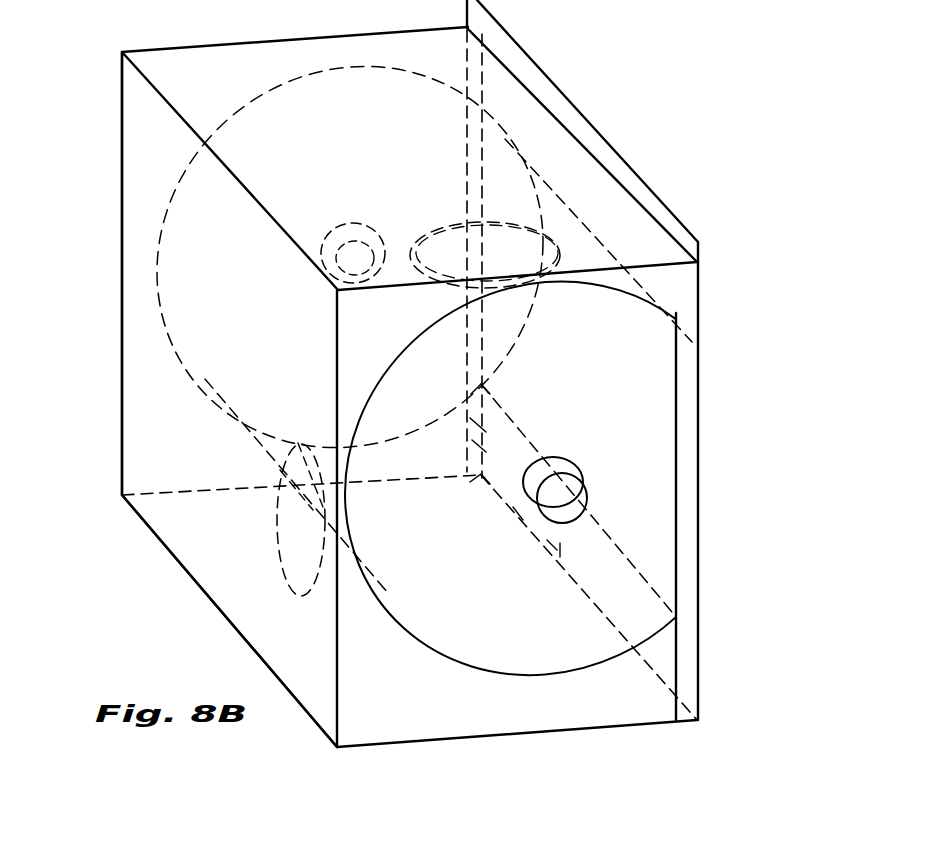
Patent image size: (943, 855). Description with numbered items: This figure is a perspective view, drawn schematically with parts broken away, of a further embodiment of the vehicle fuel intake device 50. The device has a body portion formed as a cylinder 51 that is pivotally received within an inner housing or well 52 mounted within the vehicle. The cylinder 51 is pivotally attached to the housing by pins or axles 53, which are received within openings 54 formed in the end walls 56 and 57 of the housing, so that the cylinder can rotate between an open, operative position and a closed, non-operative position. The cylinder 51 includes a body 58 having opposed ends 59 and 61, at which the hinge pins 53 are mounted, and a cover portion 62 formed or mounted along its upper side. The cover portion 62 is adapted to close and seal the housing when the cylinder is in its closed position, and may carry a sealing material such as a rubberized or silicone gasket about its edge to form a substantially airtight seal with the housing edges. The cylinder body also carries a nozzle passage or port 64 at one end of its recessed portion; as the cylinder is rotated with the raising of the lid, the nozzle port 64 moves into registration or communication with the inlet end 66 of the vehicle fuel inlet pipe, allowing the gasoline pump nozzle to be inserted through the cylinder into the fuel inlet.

The fuel intake device 50 is at (740, 181).
The cylinder 51 is at (685, 389).
The inner housing or well 52 is at (670, 661).
The pins or axles 53 is at (338, 233).
The openings 54 is at (358, 255).
The end wall 56 is at (388, 690).
The end wall 57 is at (157, 451).
The body 58 is at (190, 300).
The end 59 is at (250, 108).
The end 61 is at (582, 382).
The cover portion 62 is at (690, 530).
The nozzle passage or port 64 is at (530, 247).
The inlet end 66 is at (297, 513).